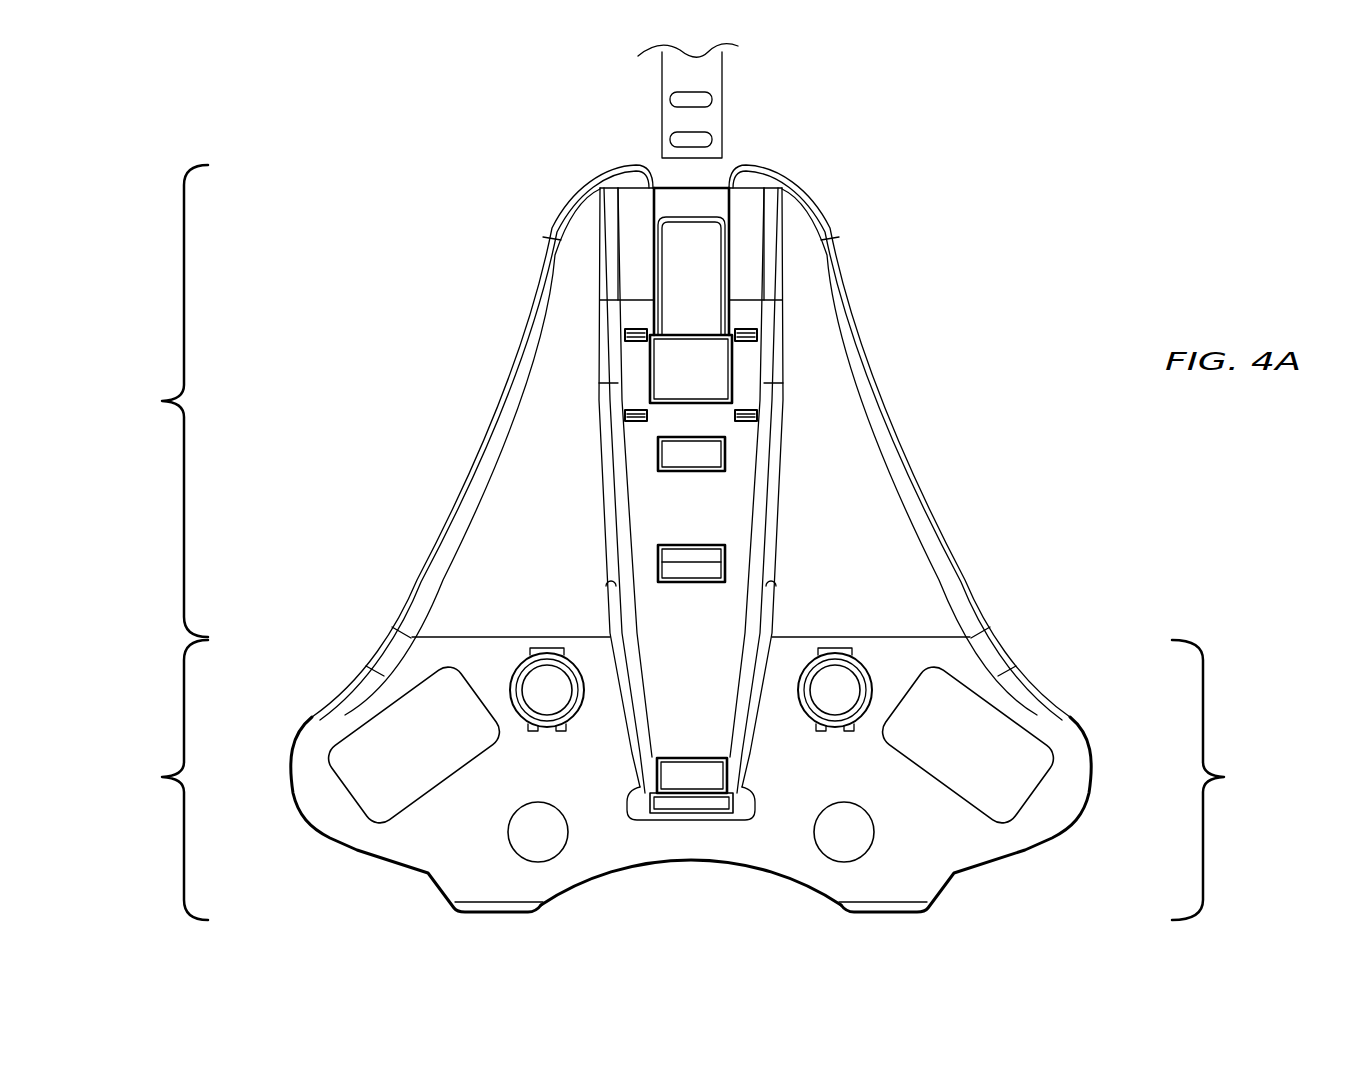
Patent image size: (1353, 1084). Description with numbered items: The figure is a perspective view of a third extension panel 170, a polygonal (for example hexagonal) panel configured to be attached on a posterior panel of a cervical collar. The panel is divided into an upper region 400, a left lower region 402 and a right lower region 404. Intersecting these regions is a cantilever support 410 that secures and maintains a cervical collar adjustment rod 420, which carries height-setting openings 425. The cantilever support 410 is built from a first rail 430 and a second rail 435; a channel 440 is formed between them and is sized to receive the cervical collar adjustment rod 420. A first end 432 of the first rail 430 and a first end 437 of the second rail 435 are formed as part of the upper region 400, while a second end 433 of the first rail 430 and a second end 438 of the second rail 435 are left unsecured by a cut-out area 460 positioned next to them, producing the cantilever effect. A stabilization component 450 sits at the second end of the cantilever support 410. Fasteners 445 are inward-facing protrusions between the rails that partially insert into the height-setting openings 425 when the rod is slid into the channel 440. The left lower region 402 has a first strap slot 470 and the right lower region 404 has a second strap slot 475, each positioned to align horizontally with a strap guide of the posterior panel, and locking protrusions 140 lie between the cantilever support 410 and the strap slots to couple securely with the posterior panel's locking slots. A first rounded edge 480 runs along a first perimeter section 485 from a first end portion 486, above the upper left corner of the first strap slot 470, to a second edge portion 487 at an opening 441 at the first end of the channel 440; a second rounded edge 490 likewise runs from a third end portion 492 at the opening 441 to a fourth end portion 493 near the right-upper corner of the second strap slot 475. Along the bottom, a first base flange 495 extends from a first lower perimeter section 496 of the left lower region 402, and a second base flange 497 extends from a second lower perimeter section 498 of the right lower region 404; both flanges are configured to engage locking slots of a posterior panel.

The locking protrusions 140 is at (538, 692).
The third extension panel 170 is at (694, 504).
The upper region 400 is at (156, 401).
The left lower region 402 is at (156, 780).
The right lower region 404 is at (1223, 780).
The cantilever support 410 is at (560, 368).
The cervical collar adjustment rod 420 is at (722, 88).
The height-setting openings 425 is at (683, 138).
The first rail 430 is at (628, 245).
The first end of the first rail 432 is at (632, 198).
The second end of the first rail 433 is at (638, 793).
The second rail 435 is at (770, 222).
The first end of the second rail 437 is at (747, 203).
The second end of the second rail 438 is at (752, 790).
The channel 440 is at (711, 162).
The opening 441 is at (697, 215).
The fasteners 445 is at (713, 453).
The stabilization component 450 is at (775, 806).
The cut-out area 460 is at (640, 807).
The first strap slot 470 is at (440, 760).
The second strap slot 475 is at (937, 750).
The first rounded edge 480 is at (375, 648).
The first perimeter section 485 is at (400, 652).
The first end portion 486 is at (315, 715).
The second edge portion 487 is at (673, 185).
The second rounded edge 490 is at (893, 417).
The third end portion 492 is at (700, 178).
The fourth end portion 493 is at (1058, 712).
The first base flange 495 is at (478, 922).
The first lower perimeter section 496 is at (515, 912).
The second base flange 497 is at (912, 923).
The second lower perimeter section 498 is at (895, 908).